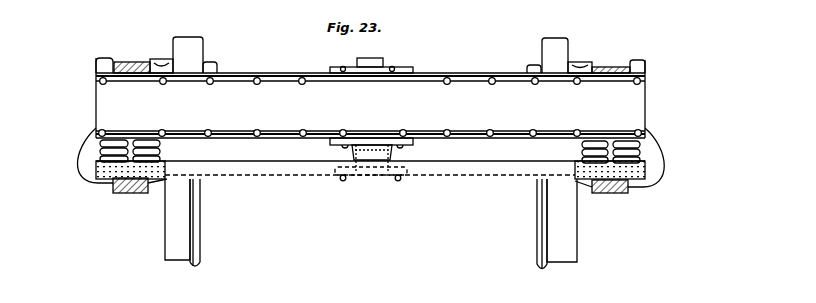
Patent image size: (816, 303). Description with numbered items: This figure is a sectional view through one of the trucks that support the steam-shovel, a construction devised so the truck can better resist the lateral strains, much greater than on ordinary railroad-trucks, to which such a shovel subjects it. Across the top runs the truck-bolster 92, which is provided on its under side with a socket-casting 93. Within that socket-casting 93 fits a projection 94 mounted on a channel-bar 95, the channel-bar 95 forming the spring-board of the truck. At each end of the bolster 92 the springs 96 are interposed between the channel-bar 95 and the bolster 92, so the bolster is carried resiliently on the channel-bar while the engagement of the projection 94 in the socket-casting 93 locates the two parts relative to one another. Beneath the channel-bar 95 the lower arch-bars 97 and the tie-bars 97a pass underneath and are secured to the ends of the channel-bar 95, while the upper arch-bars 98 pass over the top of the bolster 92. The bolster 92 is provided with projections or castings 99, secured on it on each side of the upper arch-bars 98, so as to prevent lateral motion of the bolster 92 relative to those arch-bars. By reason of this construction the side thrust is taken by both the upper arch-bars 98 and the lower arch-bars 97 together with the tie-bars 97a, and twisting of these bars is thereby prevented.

The truck-bolster 92 is at (423, 91).
The socket-casting 93 is at (350, 148).
The projection 94 is at (393, 158).
The channel-bar 95 is at (430, 173).
The springs 96 is at (100, 149).
The lower arch-bars 97 is at (130, 191).
The tie-bars 97a is at (113, 190).
The upper arch-bars 98 is at (132, 62).
The projections or castings 99 is at (102, 59).